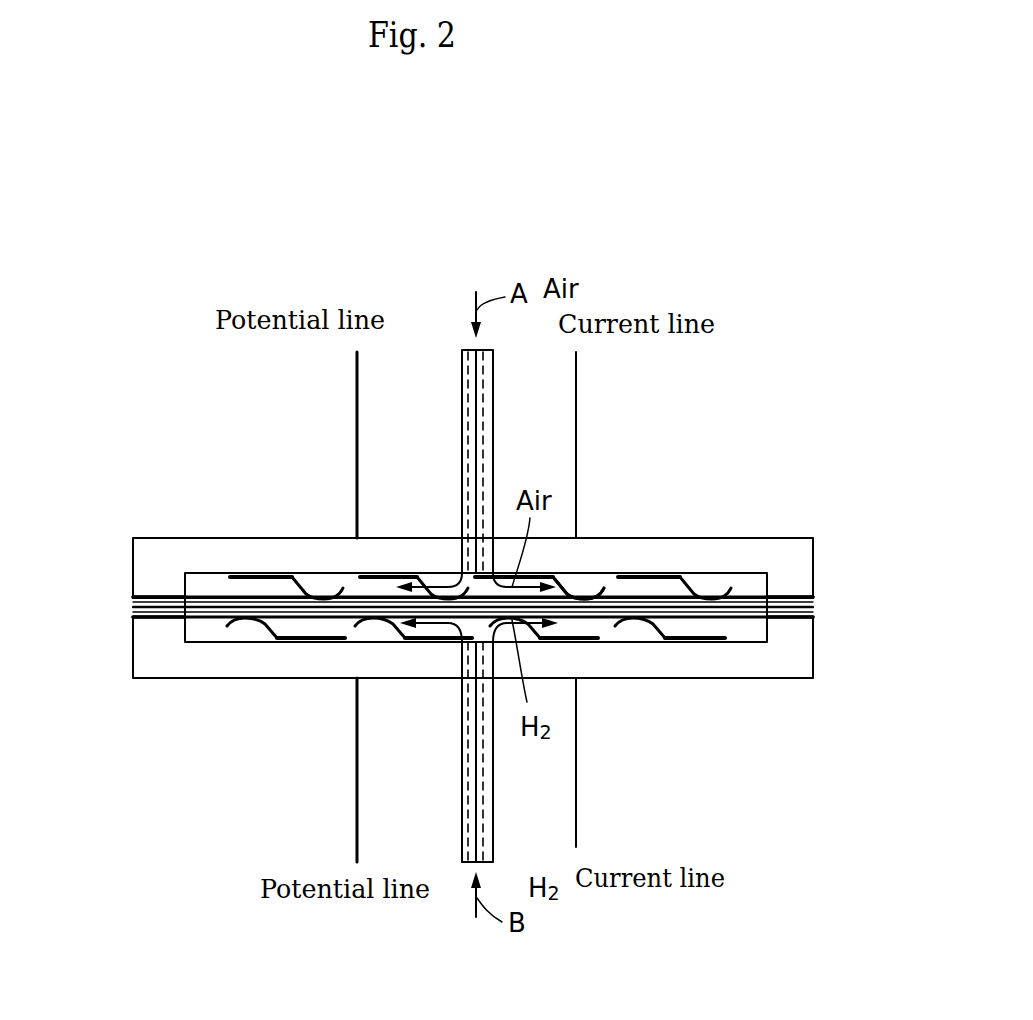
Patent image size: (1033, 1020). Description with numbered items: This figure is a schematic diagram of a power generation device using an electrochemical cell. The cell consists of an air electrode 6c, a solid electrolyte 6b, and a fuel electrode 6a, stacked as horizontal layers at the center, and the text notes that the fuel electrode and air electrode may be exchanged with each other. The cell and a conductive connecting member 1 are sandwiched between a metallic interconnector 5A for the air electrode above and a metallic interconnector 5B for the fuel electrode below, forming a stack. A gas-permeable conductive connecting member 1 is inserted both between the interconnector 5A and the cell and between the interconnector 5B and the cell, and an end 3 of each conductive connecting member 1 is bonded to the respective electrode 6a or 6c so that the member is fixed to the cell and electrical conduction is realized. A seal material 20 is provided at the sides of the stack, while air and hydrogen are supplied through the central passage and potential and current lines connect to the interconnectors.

The conductive connecting member 1 is at (603, 572).
The end of conductive connecting member 3 is at (322, 597).
The interconnector for air electrode 5A is at (690, 537).
The interconnector for fuel electrode 5B is at (633, 668).
The fuel electrode 6a is at (137, 620).
The solid electrolyte 6b is at (134, 608).
The air electrode 6c is at (134, 599).
The seal material 20 is at (162, 597).